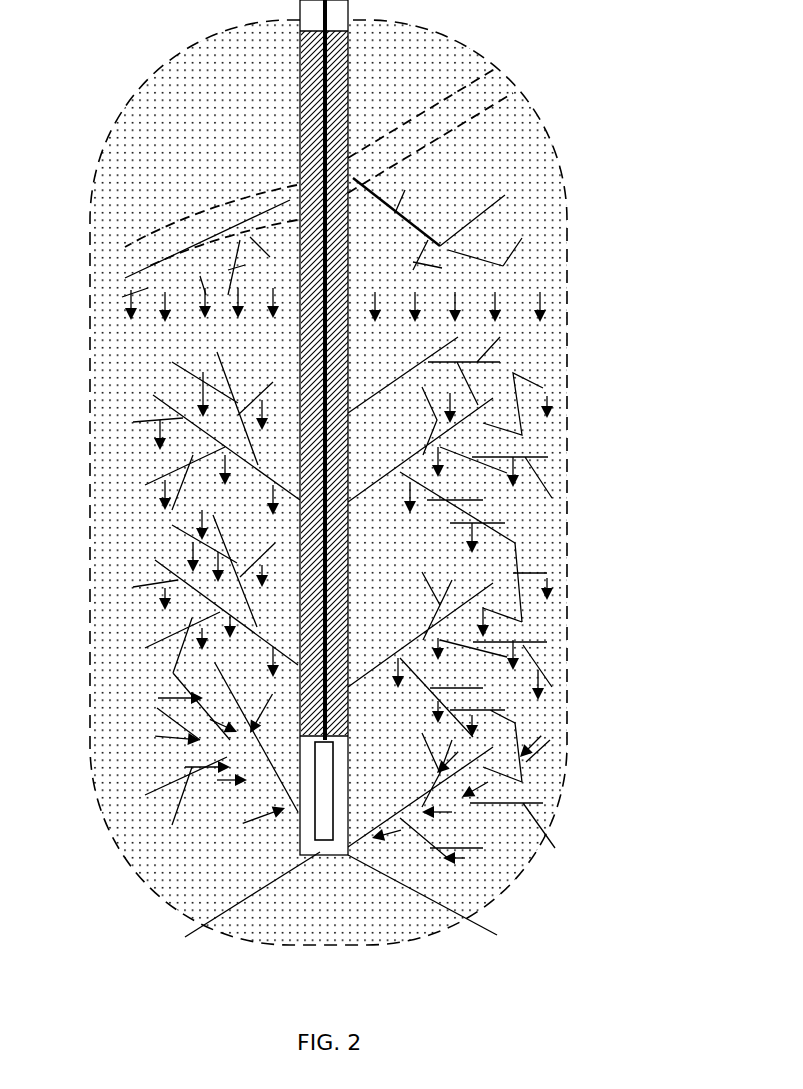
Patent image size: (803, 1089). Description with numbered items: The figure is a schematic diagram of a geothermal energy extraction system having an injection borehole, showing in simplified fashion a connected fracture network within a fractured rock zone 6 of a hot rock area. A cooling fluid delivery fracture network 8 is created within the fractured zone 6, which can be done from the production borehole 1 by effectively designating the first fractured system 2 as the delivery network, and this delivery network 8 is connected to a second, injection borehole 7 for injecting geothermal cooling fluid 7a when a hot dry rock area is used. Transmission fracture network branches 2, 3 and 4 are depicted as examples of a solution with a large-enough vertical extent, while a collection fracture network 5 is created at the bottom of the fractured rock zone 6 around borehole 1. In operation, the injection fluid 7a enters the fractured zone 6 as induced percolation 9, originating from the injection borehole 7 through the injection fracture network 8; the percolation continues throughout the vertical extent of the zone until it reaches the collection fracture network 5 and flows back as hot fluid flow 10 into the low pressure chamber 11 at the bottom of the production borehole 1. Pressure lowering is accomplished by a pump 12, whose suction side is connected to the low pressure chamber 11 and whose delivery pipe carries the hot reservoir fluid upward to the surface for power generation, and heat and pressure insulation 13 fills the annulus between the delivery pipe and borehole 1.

The borehole 1 is at (441, 912).
The first fractured system 2 is at (500, 337).
The transmission fracture network branch 3 is at (535, 468).
The transmission fracture network branch 4 is at (547, 642).
The collection fracture network 5 is at (537, 820).
The fractured rock zone 6 is at (555, 578).
The injection borehole 7 is at (487, 72).
The injection fluid 7a is at (468, 106).
The delivery fracture network 8 is at (445, 250).
The induced percolation 9 is at (548, 318).
The hot fluid flow 10 is at (522, 745).
The low pressure chamber 11 is at (237, 917).
The pump 12 is at (325, 790).
The heat and pressure insulation 13 is at (308, 683).